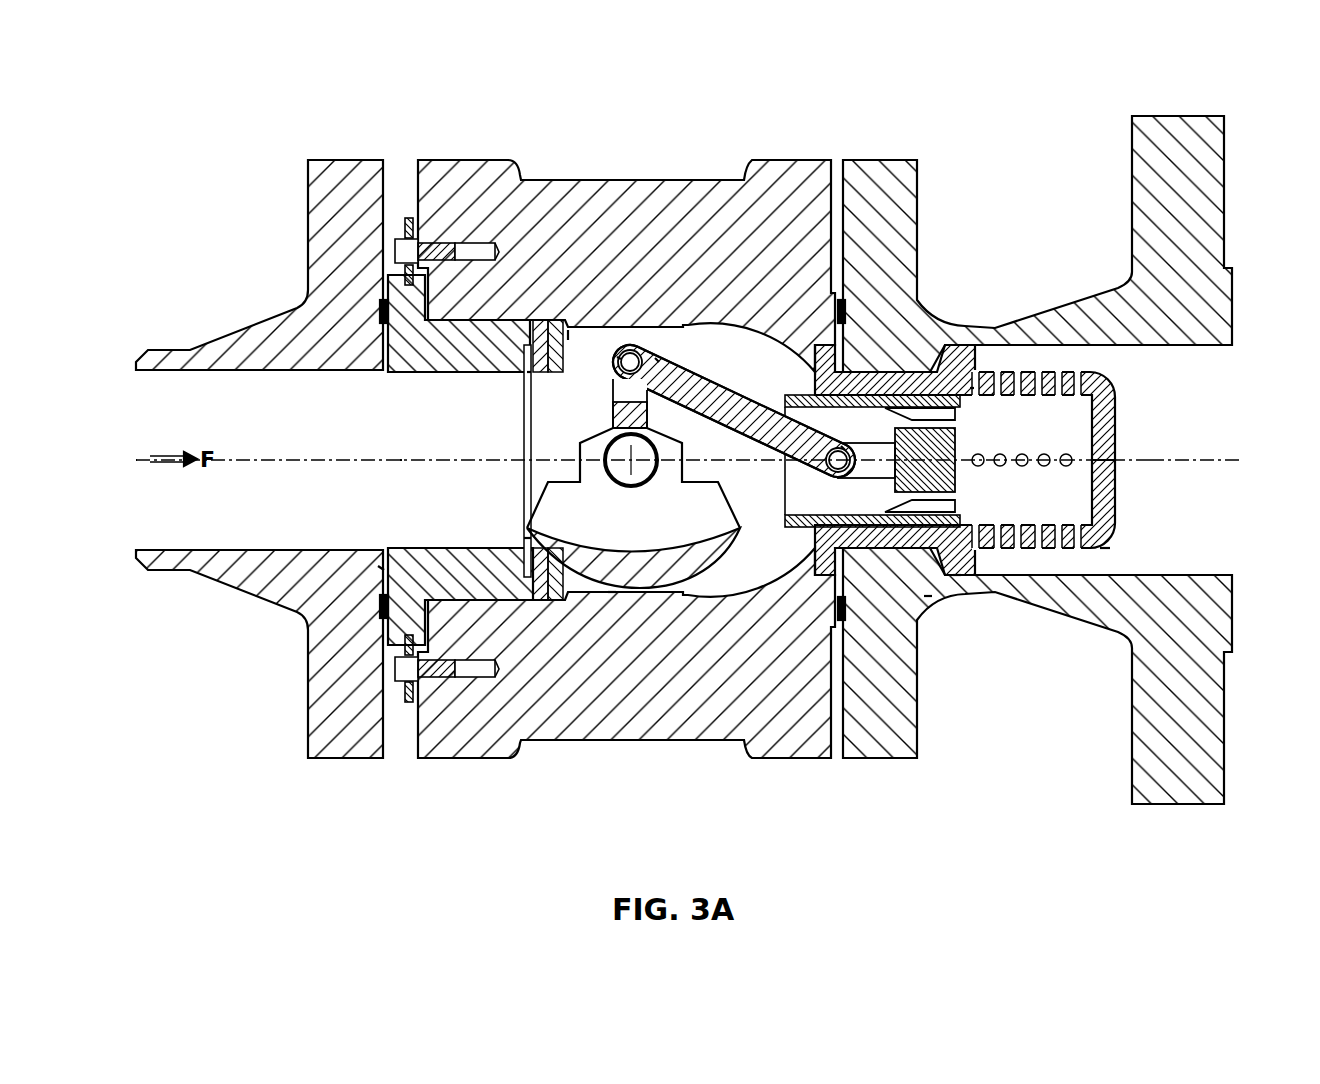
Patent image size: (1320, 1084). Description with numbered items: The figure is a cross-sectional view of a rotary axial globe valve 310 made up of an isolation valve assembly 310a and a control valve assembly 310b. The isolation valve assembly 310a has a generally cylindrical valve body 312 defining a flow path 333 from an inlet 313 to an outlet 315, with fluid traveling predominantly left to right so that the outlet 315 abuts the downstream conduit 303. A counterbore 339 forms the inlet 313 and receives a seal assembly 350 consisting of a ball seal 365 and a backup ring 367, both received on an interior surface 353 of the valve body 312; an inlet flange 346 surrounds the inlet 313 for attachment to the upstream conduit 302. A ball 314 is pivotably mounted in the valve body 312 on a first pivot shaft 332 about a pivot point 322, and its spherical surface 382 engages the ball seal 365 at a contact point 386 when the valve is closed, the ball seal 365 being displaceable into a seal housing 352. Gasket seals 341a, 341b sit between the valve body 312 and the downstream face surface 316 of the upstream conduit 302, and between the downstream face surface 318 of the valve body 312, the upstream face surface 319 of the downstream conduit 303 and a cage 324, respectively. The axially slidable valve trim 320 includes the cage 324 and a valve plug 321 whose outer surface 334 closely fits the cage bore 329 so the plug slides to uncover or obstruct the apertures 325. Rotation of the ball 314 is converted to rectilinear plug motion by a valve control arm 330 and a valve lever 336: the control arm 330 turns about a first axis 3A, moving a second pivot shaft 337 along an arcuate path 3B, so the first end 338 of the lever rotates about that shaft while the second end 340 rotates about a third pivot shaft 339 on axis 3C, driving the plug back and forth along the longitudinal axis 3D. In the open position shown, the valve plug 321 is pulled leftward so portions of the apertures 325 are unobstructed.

The rotary axial globe valve 310 is at (288, 116).
The upstream conduit 302 is at (155, 572).
The downstream conduit 303 is at (918, 745).
The valve body 312 is at (452, 760).
The inlet 313 is at (436, 450).
The ball 314 is at (548, 505).
The outlet 315 is at (1002, 548).
The downstream face surface of the upstream conduit 316 is at (380, 568).
The downstream face surface of the valve body 318 is at (832, 627).
The upstream face surface of the downstream conduit 319 is at (928, 598).
The axially slidable valve trim 320 is at (958, 362).
The valve plug 321 is at (957, 577).
The pivot point 322 is at (600, 447).
The cage 324 is at (1105, 548).
The apertures 325 is at (1060, 372).
The cage bore 329 is at (970, 520).
The valve control arm 330 is at (622, 412).
The first pivot shaft 332 is at (645, 475).
The flow path 333 is at (408, 463).
The outer surface of the valve plug 334 is at (972, 388).
The valve lever 336 is at (752, 410).
The second pivot shaft 337 is at (657, 360).
The first end of the valve lever 338 is at (633, 350).
The third pivot shaft / counterbore 339 is at (832, 471).
The second end of the valve lever 340 is at (900, 492).
The gasket seal 341a is at (385, 606).
The gasket seal 341b is at (842, 622).
The inlet flange 346 is at (412, 760).
The seal assembly 350 is at (530, 600).
The seal housing 352 is at (528, 540).
The interior surface of the valve body 353 is at (553, 340).
The ball seal 365 is at (543, 335).
The backup ring 367 is at (596, 335).
The spherical surface 382 is at (612, 598).
The contact point 386 is at (527, 372).
The isolation valve assembly 310a is at (383, 568).
The control valve assembly 310b is at (802, 550).
The first axis 3A is at (631, 487).
The arcuate path 3B is at (620, 358).
The axis of the third pivot shaft 3C is at (843, 448).
The longitudinal axis 3D is at (1217, 460).